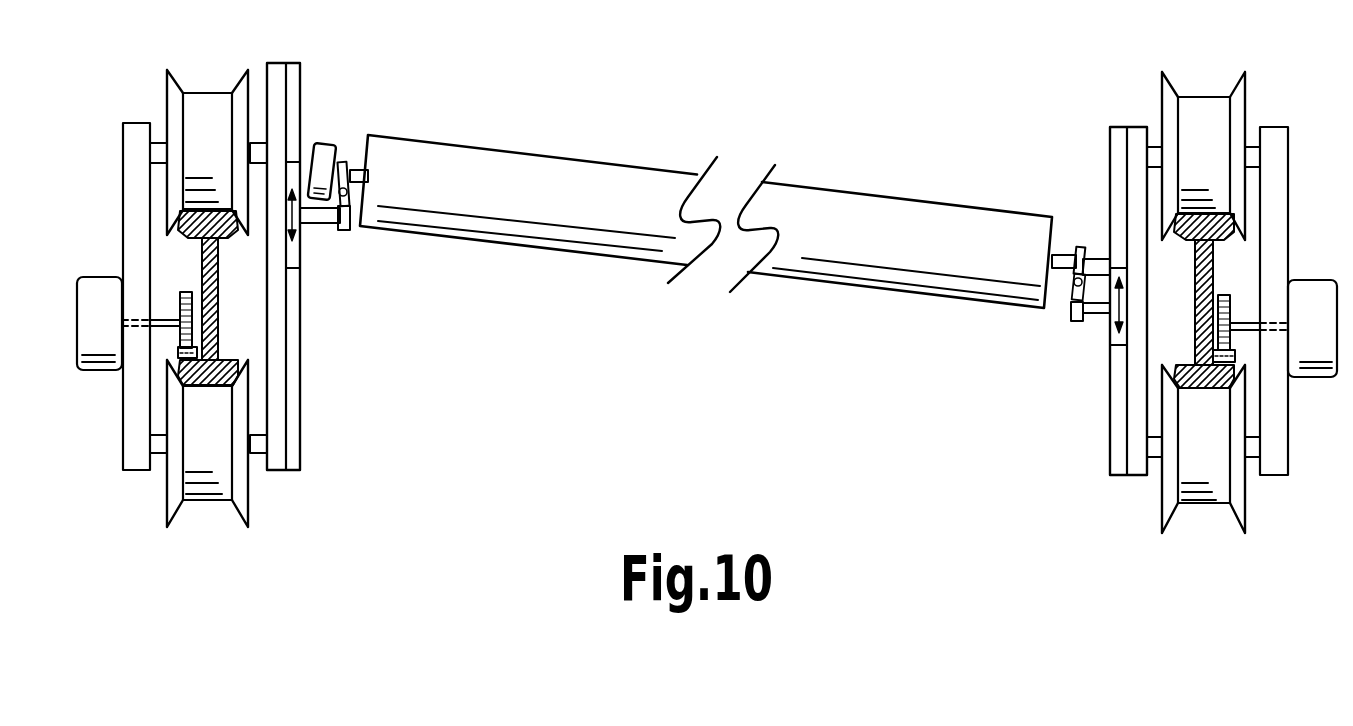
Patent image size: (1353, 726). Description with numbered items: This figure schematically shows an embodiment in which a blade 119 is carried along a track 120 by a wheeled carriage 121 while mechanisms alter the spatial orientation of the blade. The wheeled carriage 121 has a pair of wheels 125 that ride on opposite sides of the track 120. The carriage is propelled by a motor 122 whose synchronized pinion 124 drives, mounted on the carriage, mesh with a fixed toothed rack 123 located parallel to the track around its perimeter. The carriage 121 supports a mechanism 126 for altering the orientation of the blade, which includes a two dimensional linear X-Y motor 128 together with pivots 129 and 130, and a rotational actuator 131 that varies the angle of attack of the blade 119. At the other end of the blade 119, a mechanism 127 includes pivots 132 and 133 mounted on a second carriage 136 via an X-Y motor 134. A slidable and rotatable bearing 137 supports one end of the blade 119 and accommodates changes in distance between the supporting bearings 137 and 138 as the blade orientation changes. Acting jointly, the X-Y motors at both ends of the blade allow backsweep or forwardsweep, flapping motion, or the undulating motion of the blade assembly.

The blade 119 is at (952, 203).
The track 120 is at (222, 273).
The wheeled carriage 121 is at (108, 130).
The motor 122 is at (85, 277).
The fixed toothed rack 123 is at (178, 348).
The pinion 124 is at (177, 333).
The wheels 125 is at (167, 70).
The mechanism 126 is at (357, 256).
The mechanism 127 is at (1068, 368).
The two dimensional linear X-Y motor 128 is at (287, 269).
The pivot 129 is at (334, 226).
The pivot 130 is at (352, 222).
The rotational actuator 131 is at (325, 145).
The pivot 132 is at (1071, 320).
The pivot 133 is at (1073, 289).
The X-Y motor 134 is at (1110, 340).
The carriage 136 is at (1067, 109).
The slidable and rotatable bearing 137 is at (1081, 247).
The bearing 138 is at (344, 160).